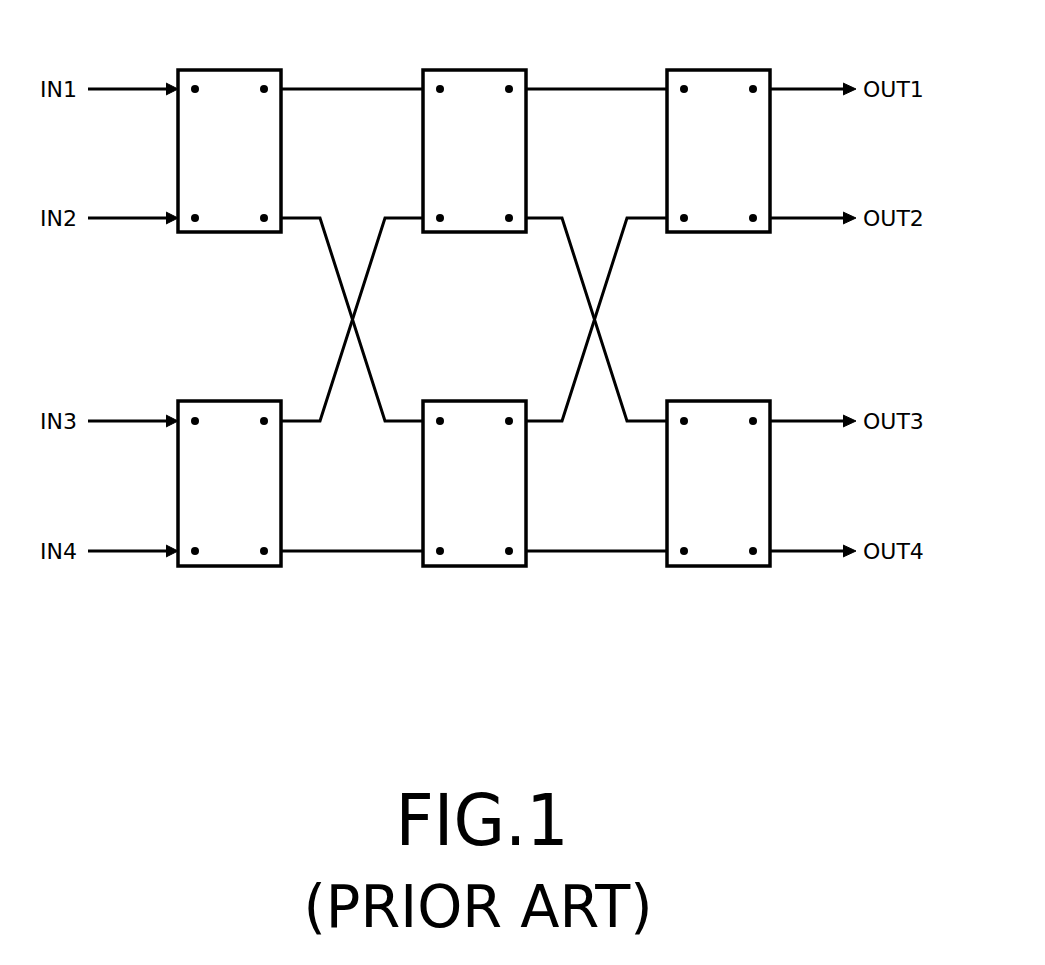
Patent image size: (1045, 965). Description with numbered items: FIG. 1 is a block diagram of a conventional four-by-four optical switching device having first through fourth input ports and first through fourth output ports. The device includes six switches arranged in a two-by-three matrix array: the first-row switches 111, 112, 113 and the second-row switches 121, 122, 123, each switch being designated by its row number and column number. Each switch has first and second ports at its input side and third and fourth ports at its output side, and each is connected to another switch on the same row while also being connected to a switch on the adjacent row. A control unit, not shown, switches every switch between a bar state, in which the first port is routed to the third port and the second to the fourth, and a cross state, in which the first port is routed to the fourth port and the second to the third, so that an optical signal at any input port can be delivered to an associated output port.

The SW11 switch 111 is at (223, 232).
The SW12 switch 112 is at (468, 232).
The SW13 switch 113 is at (712, 232).
The SW21 switch 121 is at (223, 566).
The SW22 switch 122 is at (468, 566).
The SW23 switch 123 is at (712, 566).